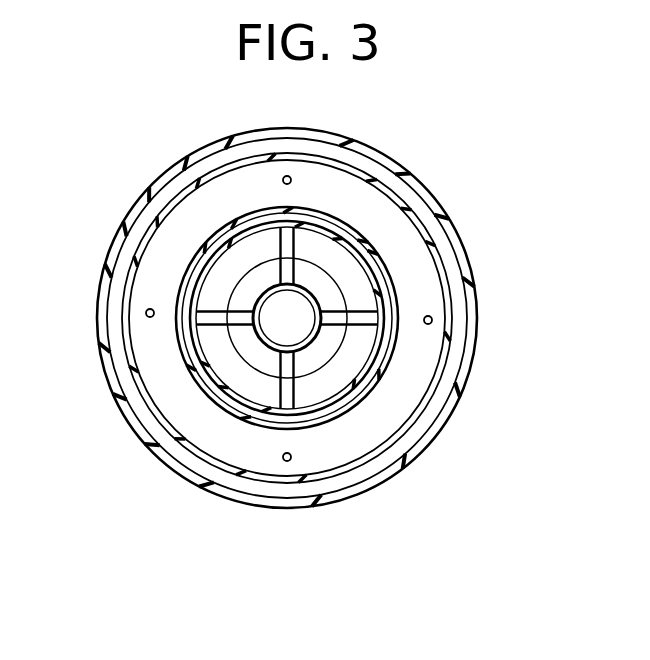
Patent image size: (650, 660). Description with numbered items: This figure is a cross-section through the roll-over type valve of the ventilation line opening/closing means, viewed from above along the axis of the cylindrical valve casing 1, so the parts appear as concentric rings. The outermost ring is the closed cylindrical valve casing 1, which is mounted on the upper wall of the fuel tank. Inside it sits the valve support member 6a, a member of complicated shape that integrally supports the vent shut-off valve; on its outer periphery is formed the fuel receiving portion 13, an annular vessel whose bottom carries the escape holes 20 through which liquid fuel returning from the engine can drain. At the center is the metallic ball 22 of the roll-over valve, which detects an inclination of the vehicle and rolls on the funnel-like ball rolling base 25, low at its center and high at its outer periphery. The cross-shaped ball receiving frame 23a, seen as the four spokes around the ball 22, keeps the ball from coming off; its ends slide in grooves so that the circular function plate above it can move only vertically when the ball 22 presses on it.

The cylindrical valve casing 1 is at (470, 366).
The fuel receiving portion 13 is at (420, 278).
The escape holes 20 is at (288, 176).
The ball 22 is at (300, 337).
The ball receiving frame 23a is at (363, 231).
The valve support member 6a is at (389, 264).
The ball rolling base 25 is at (340, 345).